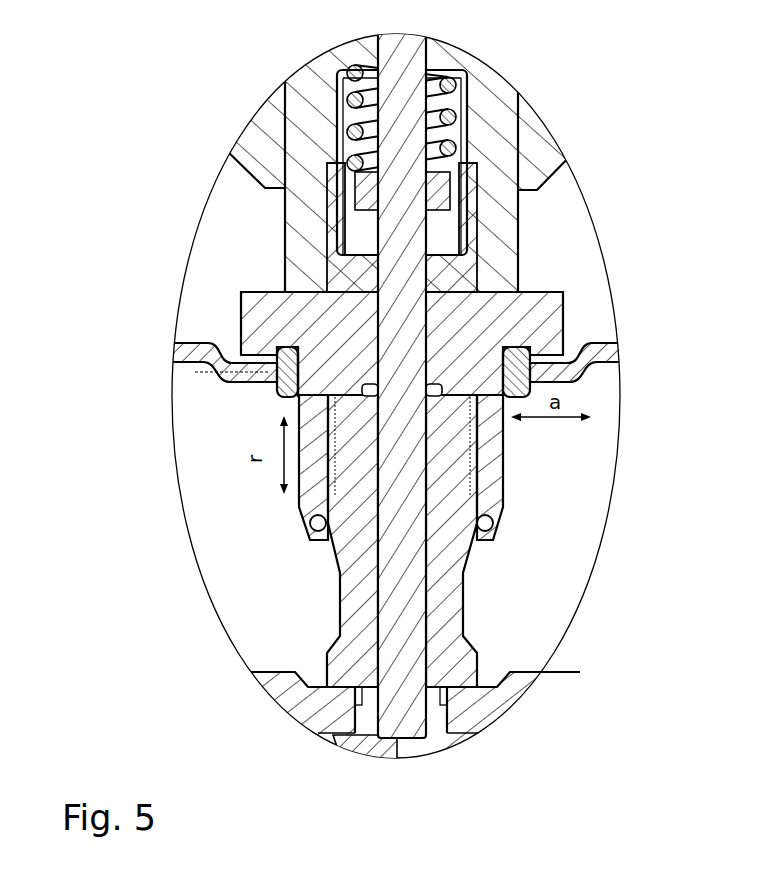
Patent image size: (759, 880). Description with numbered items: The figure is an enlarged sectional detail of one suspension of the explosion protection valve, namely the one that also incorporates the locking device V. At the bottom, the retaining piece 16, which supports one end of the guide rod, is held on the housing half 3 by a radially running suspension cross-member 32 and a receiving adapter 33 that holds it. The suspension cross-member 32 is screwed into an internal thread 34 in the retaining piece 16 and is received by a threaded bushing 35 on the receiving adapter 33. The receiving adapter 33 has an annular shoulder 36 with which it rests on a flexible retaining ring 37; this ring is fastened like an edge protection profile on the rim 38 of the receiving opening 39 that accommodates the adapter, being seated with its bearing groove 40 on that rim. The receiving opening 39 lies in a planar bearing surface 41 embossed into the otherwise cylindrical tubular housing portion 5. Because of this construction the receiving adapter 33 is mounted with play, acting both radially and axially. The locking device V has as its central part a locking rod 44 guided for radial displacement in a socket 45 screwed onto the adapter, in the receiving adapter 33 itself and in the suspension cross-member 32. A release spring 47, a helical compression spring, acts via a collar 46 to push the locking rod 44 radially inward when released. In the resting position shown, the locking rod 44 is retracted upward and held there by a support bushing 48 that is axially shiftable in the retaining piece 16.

The housing half 3 is at (527, 670).
The tubular housing portion 5 is at (190, 352).
The retaining piece 16 is at (503, 698).
The suspension cross-member 32 is at (452, 580).
The receiving adapter 33 is at (520, 439).
The internal thread 34 is at (452, 726).
The threaded bushing 35 is at (497, 468).
The annular shoulder 36 is at (556, 316).
The flexible retaining ring 37 is at (282, 350).
The rim 38 is at (268, 372).
The receiving opening 39 is at (540, 382).
The bearing groove 40 is at (250, 388).
The planar bearing surface 41 is at (600, 345).
The locking rod 44 is at (440, 176).
The socket 45 is at (498, 93).
The collar 46 is at (362, 200).
The release spring 47 is at (352, 138).
The support bushing 48 is at (396, 745).
The locking device V is at (530, 240).